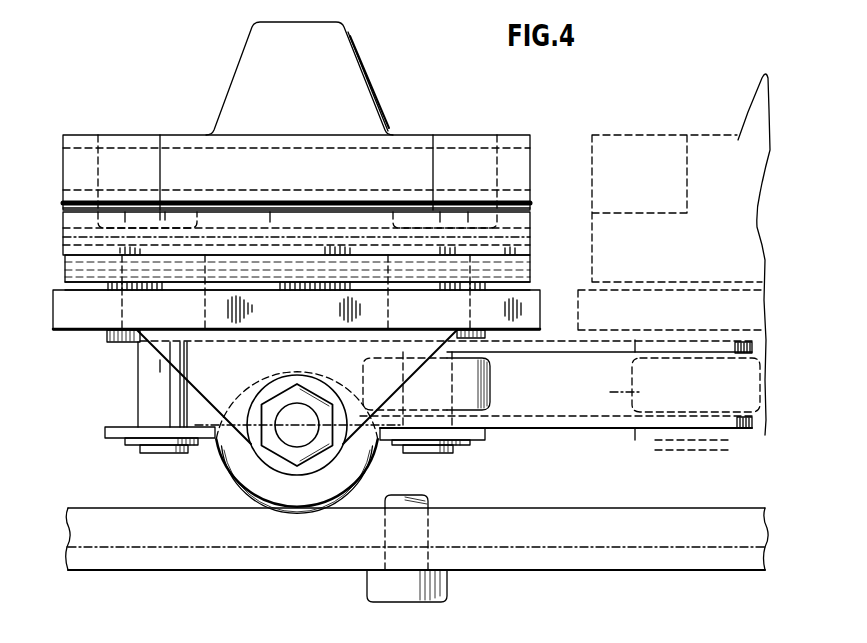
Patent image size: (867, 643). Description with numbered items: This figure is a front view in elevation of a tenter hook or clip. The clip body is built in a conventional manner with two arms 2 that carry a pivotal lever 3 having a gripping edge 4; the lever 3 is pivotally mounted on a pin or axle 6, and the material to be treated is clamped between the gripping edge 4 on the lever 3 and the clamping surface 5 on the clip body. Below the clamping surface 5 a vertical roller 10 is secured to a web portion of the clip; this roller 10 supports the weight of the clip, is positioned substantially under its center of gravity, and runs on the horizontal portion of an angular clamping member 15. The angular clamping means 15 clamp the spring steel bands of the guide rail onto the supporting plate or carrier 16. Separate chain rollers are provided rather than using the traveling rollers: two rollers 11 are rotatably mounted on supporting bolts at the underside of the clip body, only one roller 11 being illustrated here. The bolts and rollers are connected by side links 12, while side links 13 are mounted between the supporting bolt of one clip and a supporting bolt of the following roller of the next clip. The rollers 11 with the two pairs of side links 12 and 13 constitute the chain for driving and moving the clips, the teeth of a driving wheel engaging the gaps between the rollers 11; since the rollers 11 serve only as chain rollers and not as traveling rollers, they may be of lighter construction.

The arms 2 is at (86, 141).
The pivotal lever 3 is at (70, 265).
The gripping edge 4 is at (68, 284).
The clamping surface 5 is at (62, 314).
The pin or axle 6 is at (75, 163).
The vertical roller 10 is at (242, 465).
The chain rollers 11 is at (477, 388).
The side links 12 is at (126, 338).
The side links 13 is at (753, 420).
The angular clamping means 15 is at (153, 533).
The supporting plate or carrier 16 is at (252, 558).